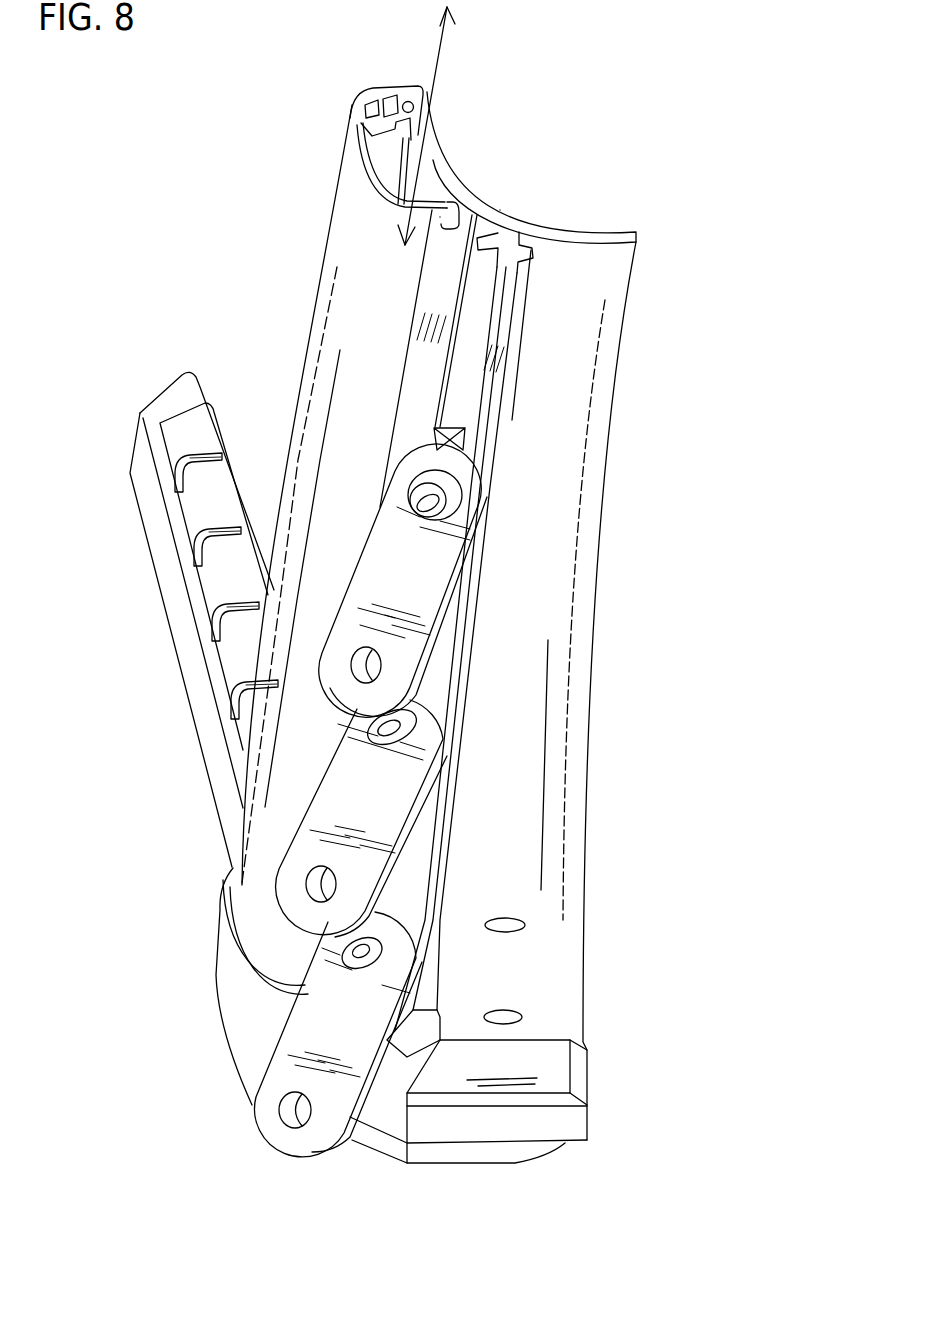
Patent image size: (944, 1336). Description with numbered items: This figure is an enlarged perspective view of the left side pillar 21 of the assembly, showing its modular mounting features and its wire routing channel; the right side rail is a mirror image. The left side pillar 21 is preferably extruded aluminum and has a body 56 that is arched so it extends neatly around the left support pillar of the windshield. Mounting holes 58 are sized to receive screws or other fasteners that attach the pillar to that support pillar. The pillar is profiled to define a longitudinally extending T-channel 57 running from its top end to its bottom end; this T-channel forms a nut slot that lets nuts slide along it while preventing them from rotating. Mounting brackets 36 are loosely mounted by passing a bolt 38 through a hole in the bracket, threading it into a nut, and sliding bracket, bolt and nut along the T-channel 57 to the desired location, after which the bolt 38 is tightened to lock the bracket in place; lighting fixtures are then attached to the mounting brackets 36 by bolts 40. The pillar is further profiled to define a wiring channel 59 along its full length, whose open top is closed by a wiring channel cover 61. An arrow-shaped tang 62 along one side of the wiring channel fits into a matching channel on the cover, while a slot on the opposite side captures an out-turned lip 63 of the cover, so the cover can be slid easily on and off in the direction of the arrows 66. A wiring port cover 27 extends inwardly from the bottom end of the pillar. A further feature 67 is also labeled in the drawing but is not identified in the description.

The left side pillar 21 is at (606, 679).
The wiring port cover 27 is at (162, 555).
The mounting brackets 36 is at (422, 587).
The bolts 38 is at (445, 497).
The bolts 40 is at (450, 440).
The body 56 is at (497, 196).
The T-channel 57 is at (493, 247).
The mounting holes 58 is at (503, 1014).
The wiring channel 59 is at (436, 203).
The wiring channel cover 61 is at (345, 235).
The arrow-shaped tang 62 is at (374, 110).
The out-turned lip 63 is at (452, 208).
The arrows 66 is at (438, 50).
The hook 67 is at (455, 214).